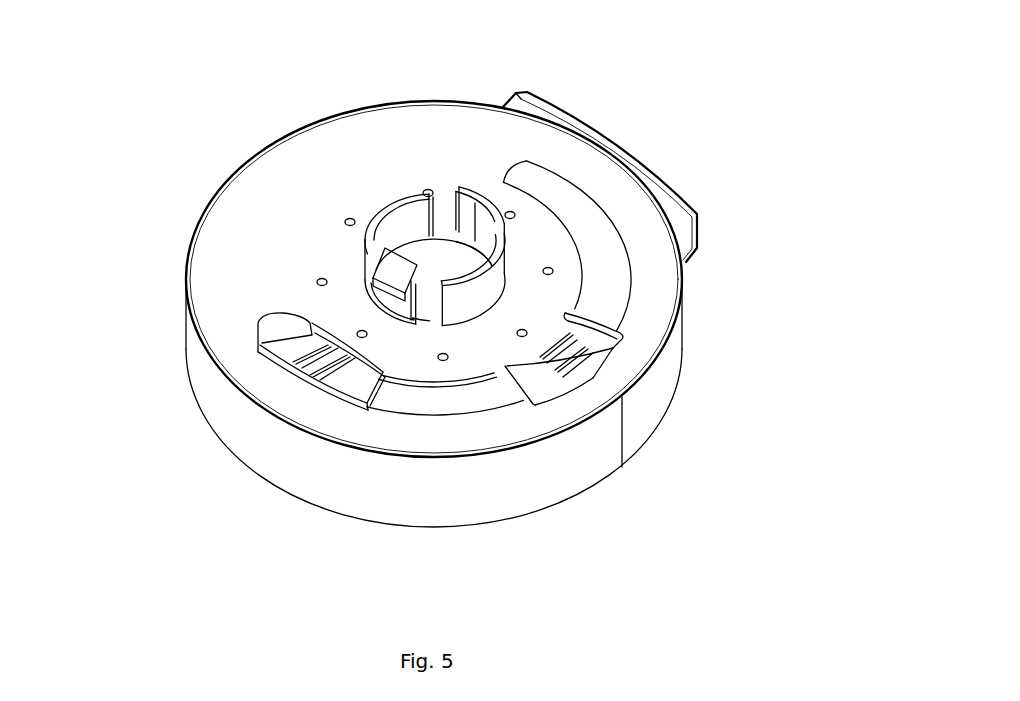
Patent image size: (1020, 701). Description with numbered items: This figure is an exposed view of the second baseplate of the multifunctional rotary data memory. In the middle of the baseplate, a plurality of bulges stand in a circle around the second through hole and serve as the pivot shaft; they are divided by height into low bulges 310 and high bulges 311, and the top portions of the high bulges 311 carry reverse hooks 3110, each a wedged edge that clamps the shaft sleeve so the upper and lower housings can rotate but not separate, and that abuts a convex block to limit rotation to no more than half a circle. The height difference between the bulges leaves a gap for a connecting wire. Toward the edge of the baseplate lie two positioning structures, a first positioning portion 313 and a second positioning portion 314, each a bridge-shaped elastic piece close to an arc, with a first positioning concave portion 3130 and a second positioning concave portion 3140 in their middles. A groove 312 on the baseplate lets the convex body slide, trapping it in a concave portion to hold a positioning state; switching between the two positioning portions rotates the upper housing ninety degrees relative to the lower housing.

The low bulges 310 is at (411, 169).
The reverse hook 3110 is at (387, 267).
The high bulges 311 is at (466, 224).
The groove 312 is at (623, 257).
The first positioning portion 313 is at (246, 461).
The first positioning concave portion 3130 is at (307, 387).
The second positioning portion 314 is at (635, 455).
The second positioning concave portion 3140 is at (547, 383).